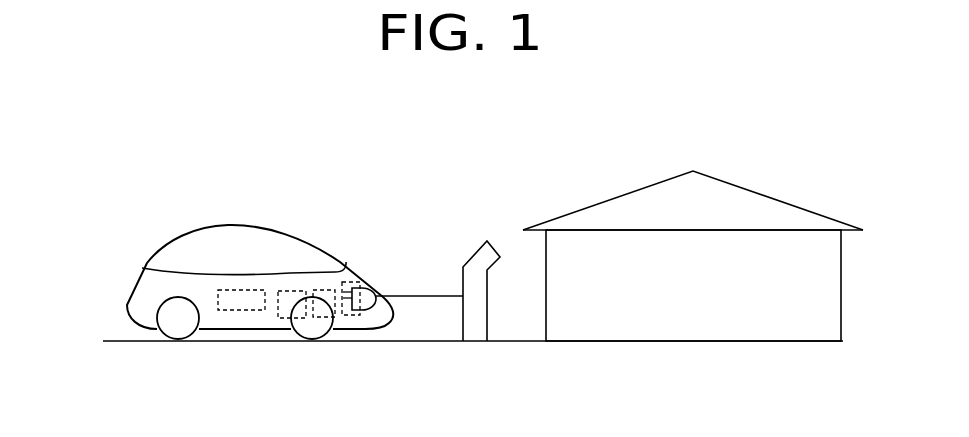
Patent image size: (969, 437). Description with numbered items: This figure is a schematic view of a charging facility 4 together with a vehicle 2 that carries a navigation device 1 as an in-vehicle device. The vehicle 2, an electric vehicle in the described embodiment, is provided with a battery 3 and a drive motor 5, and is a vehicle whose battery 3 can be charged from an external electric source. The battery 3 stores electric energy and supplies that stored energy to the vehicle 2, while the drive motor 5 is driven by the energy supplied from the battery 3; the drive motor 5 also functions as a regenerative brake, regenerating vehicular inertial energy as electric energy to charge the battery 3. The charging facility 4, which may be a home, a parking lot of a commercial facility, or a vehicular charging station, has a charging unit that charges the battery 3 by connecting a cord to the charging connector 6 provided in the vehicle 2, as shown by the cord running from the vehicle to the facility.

The navigation device 1 is at (228, 311).
The vehicle 2 is at (143, 285).
The battery 3 is at (338, 317).
The charging facility 4 is at (795, 323).
The drive motor 5 is at (272, 318).
The charging connector 6 is at (348, 316).